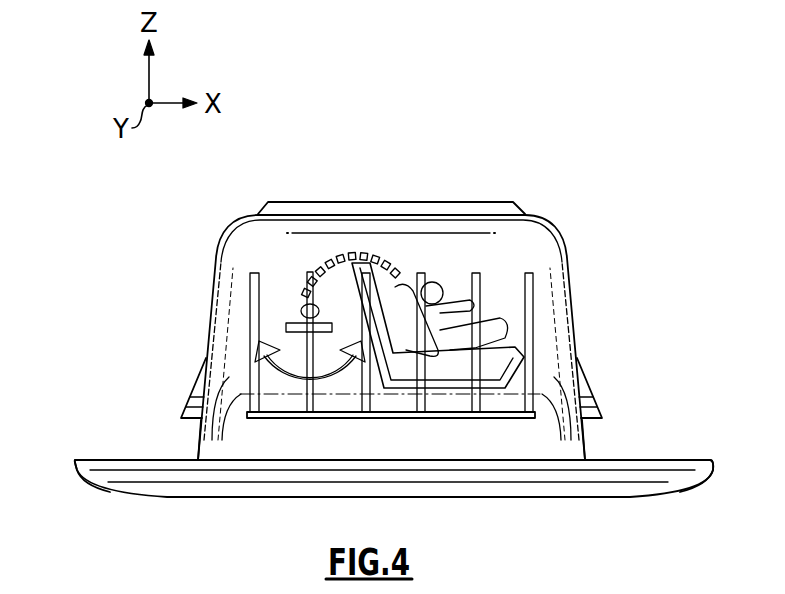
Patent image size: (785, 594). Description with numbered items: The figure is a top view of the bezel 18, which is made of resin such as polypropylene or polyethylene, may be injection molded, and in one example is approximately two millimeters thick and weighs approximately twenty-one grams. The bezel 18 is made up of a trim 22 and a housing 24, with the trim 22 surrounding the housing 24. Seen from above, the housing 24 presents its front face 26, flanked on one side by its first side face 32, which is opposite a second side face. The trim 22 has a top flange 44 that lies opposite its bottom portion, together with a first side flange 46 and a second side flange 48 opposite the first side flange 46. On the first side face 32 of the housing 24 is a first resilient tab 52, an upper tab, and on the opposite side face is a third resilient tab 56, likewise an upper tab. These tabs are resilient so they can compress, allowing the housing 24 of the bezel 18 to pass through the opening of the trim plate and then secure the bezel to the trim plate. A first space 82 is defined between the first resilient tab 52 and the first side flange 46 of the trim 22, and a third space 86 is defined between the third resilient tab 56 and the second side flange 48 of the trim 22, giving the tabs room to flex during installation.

The bezel 18 is at (575, 75).
The trim 22 is at (620, 497).
The housing 24 is at (574, 228).
The front face 26 is at (398, 201).
The first side face 32 is at (214, 272).
The top flange 44 is at (490, 484).
The first side flange 46 is at (709, 462).
The second side flange 48 is at (75, 462).
The first resilient tab 52 is at (590, 386).
The third resilient tab 56 is at (192, 388).
The first space 82 is at (595, 437).
The third space 86 is at (187, 437).